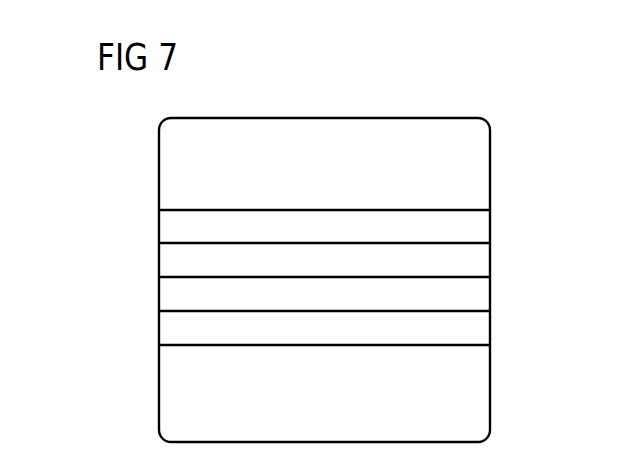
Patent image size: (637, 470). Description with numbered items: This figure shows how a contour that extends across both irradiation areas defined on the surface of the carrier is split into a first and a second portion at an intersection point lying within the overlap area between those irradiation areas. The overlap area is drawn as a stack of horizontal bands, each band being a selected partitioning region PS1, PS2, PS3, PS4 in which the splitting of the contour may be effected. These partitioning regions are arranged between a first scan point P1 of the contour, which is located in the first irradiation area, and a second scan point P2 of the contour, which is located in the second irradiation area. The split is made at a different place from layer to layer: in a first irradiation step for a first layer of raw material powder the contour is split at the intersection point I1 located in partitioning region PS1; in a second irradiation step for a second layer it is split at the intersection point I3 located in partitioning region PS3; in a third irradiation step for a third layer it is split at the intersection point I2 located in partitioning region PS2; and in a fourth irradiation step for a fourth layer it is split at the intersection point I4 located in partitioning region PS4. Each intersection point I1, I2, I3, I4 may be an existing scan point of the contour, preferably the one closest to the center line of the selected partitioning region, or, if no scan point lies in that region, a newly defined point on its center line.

The first scan point P1 is at (216, 367).
The second scan point P2 is at (433, 186).
The partitioning region PS1 is at (168, 326).
The partitioning region PS2 is at (168, 293).
The partitioning region PS3 is at (168, 260).
The partitioning region PS4 is at (168, 226).
The intersection point I1 is at (263, 328).
The intersection point I2 is at (306, 293).
The intersection point I3 is at (346, 259).
The intersection point I4 is at (388, 225).